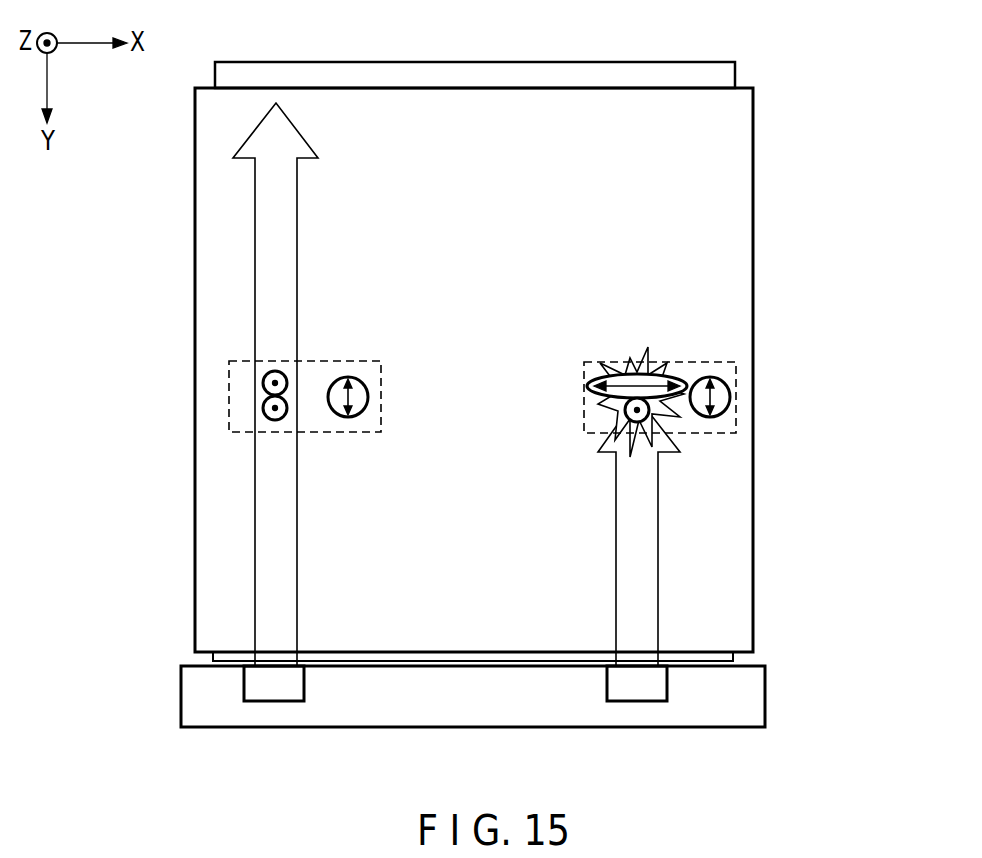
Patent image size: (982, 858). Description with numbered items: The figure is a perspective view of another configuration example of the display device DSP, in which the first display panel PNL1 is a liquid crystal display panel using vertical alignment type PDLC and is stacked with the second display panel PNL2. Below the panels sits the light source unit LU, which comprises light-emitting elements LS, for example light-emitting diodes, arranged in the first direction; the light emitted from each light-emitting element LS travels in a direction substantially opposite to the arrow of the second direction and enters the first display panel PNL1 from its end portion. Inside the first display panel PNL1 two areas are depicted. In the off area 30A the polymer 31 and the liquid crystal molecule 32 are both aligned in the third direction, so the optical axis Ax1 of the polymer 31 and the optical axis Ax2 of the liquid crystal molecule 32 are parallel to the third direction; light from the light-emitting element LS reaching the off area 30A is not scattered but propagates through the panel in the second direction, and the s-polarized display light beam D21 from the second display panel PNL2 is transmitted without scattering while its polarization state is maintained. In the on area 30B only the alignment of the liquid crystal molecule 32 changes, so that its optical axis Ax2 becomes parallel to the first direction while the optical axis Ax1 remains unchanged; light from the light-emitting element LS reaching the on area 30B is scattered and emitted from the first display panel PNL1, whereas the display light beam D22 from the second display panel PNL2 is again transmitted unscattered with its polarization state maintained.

The first display panel PNL1 is at (753, 88).
The second display panel PNL2 is at (735, 62).
The display device DSP is at (808, 231).
The light source unit LU is at (765, 697).
The light-emitting element LS is at (288, 702).
The off area 30A is at (373, 361).
The on area 30B is at (713, 362).
The polymer 31 is at (278, 420).
The liquid crystal molecule 32 is at (283, 373).
The optical axis Ax1 is at (272, 408).
The optical axis Ax2 is at (272, 383).
The display light beam D21 is at (368, 397).
The display light beam D22 is at (730, 392).